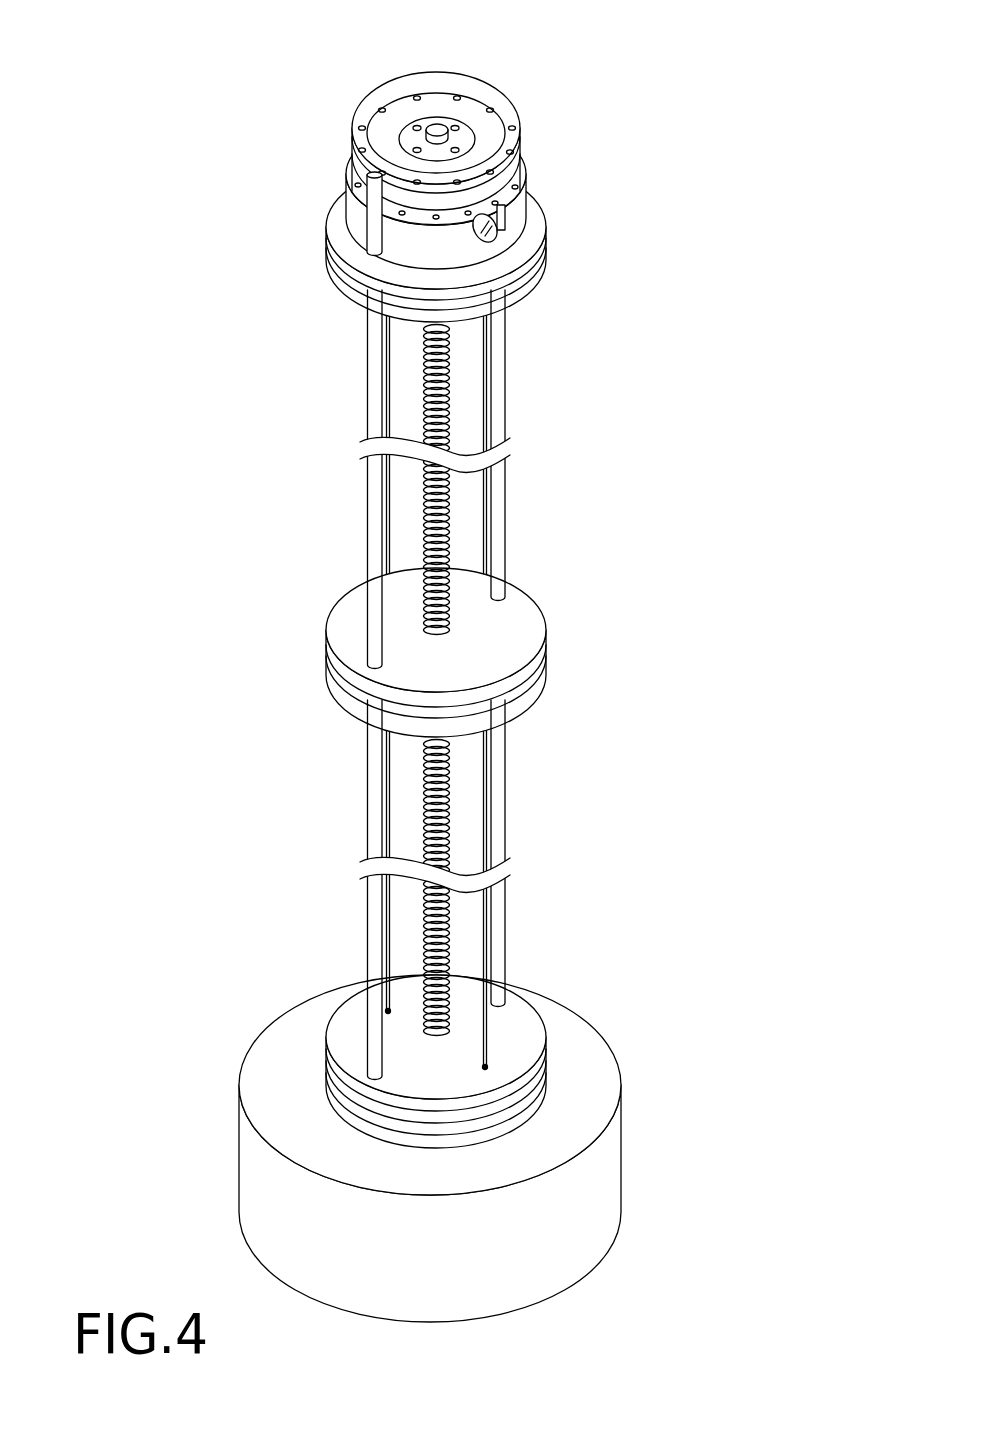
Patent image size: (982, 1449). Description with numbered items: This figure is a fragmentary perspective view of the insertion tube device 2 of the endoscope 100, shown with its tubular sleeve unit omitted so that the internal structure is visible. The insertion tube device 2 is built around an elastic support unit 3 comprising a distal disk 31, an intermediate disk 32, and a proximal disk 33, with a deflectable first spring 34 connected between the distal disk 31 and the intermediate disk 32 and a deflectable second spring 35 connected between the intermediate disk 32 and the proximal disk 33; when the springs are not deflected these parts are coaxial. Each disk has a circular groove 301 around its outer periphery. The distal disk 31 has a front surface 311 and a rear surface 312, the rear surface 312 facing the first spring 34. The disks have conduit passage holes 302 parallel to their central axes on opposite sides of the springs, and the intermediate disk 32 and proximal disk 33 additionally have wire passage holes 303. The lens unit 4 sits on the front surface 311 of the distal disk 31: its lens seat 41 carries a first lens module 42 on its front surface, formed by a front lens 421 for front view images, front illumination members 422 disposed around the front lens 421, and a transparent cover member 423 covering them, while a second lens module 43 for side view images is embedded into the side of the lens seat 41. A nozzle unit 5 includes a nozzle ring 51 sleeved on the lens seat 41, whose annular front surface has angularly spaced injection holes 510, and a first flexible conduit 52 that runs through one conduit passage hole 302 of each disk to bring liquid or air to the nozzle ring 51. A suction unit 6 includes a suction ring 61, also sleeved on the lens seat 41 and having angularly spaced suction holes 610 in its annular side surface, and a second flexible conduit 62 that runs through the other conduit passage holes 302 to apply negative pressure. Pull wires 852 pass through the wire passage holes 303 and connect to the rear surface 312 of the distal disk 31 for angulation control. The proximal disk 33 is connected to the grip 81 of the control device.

The endoscope 100 is at (390, 680).
The insertion tube device 2 is at (397, 1155).
The elastic support unit 3 is at (459, 752).
The lens unit 4 is at (439, 177).
The nozzle unit 5 is at (415, 589).
The suction unit 6 is at (472, 565).
The distal disk 31 is at (340, 203).
The intermediate disk 32 is at (340, 622).
The proximal disk 33 is at (352, 1018).
The first spring 34 is at (423, 488).
The second spring 35 is at (427, 845).
The lens seat 41 is at (441, 245).
The first lens module 42 is at (489, 77).
The second lens module 43 is at (497, 228).
The nozzle ring 51 is at (519, 137).
The first flexible conduit 52 is at (375, 402).
The suction ring 61 is at (517, 187).
The second flexible conduit 62 is at (502, 500).
The grip 81 is at (531, 1268).
The circular groove 301 is at (517, 283).
The conduit passage holes 302 is at (511, 603).
The wire passage holes 303 is at (484, 658).
The front surface 311 is at (537, 210).
The rear surface 312 is at (525, 303).
The front lens 421 is at (437, 126).
The front illumination members 422 is at (413, 148).
The transparent cover member 423 is at (422, 76).
The injection holes 510 is at (513, 126).
The suction holes 610 is at (437, 218).
The pull wires 852 is at (388, 780).